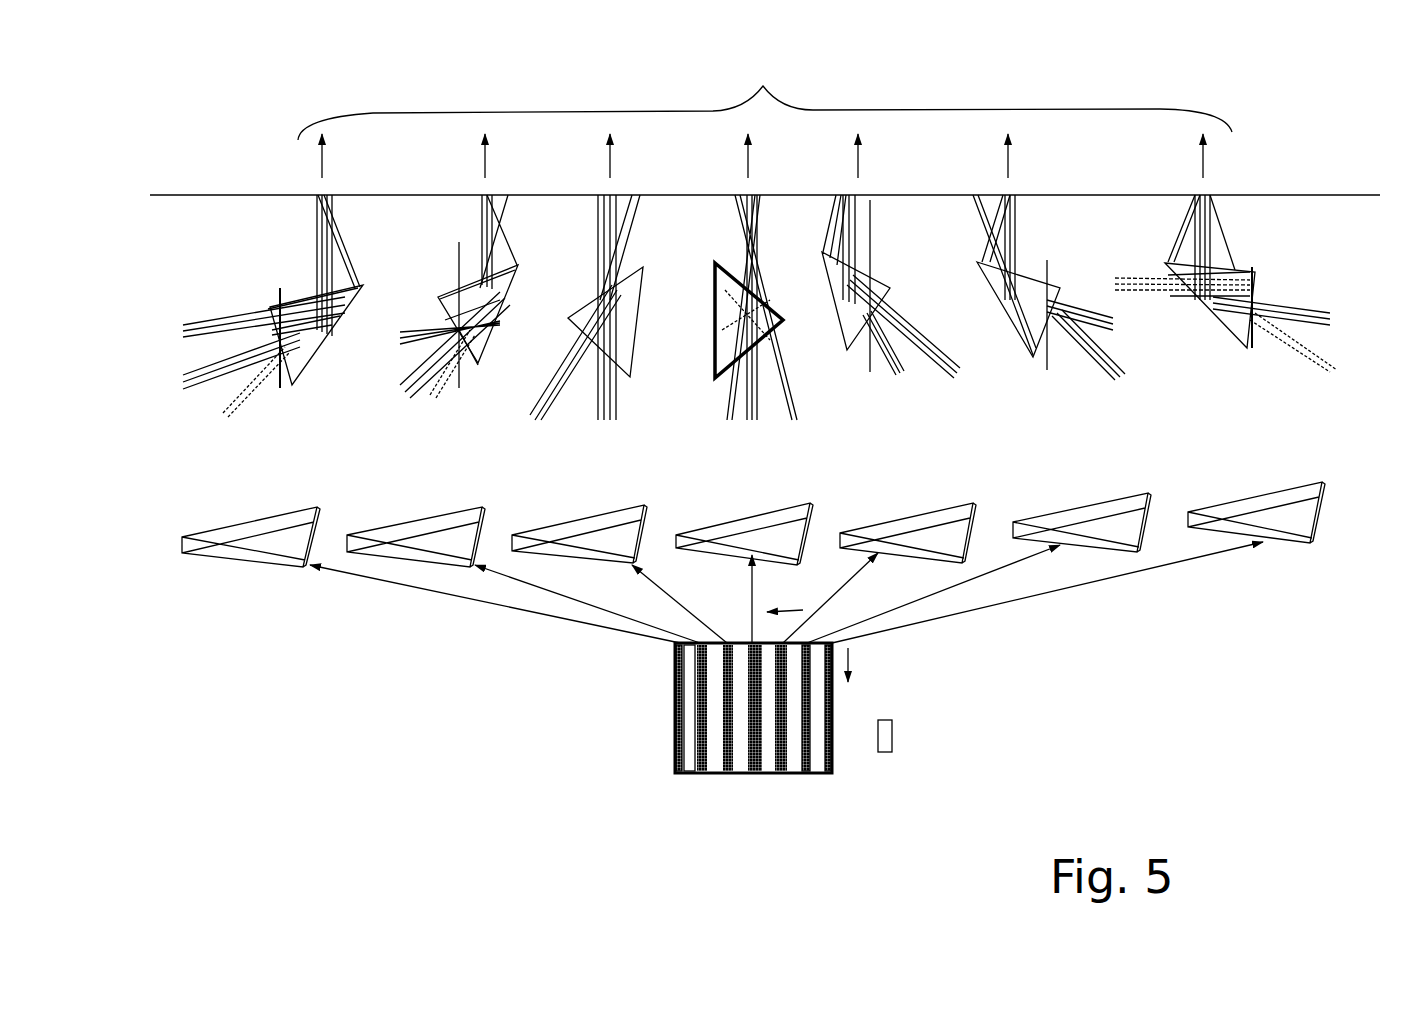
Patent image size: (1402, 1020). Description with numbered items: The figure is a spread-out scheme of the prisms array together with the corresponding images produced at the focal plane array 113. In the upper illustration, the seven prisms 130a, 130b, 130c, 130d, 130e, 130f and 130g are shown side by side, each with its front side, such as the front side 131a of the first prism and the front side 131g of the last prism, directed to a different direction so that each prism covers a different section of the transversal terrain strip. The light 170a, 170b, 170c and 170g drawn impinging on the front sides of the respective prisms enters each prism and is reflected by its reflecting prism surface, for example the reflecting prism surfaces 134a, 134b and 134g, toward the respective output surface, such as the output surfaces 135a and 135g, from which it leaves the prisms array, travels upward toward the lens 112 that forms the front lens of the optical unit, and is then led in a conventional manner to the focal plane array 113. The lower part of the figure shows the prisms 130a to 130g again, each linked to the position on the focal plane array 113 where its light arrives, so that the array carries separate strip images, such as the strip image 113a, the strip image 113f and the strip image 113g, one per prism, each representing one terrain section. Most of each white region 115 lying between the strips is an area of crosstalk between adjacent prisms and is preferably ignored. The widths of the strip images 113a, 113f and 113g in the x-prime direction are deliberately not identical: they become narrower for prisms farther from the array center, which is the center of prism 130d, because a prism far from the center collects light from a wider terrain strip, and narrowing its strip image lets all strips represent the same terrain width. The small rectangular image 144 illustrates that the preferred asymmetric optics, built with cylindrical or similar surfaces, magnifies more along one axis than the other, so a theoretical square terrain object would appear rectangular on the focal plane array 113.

The lens 112 is at (765, 117).
The focal plane array 113 is at (840, 686).
The strip image 113a is at (675, 767).
The strip image 113f is at (812, 773).
The strip image 113g is at (832, 745).
The white region 115 is at (688, 690).
The image 144 is at (893, 732).
The prism 130a is at (279, 270).
The prism 130b is at (432, 512).
The prism 130c is at (600, 515).
The prism 130d is at (787, 508).
The prism 130e is at (930, 512).
The prism 130f is at (1115, 505).
The prism 130g is at (1242, 253).
The front side 131a is at (273, 327).
The front side 131g is at (1257, 283).
The reflecting prism surface 134a is at (337, 318).
The reflecting prism surface 134b is at (510, 288).
The reflecting prism surface 134g is at (1210, 307).
The output surface 135a is at (307, 297).
The output surface 135g is at (1225, 267).
The light beam 170a is at (203, 347).
The light beam 170b is at (418, 345).
The light beam 170c is at (547, 385).
The light beam 170g is at (1347, 305).